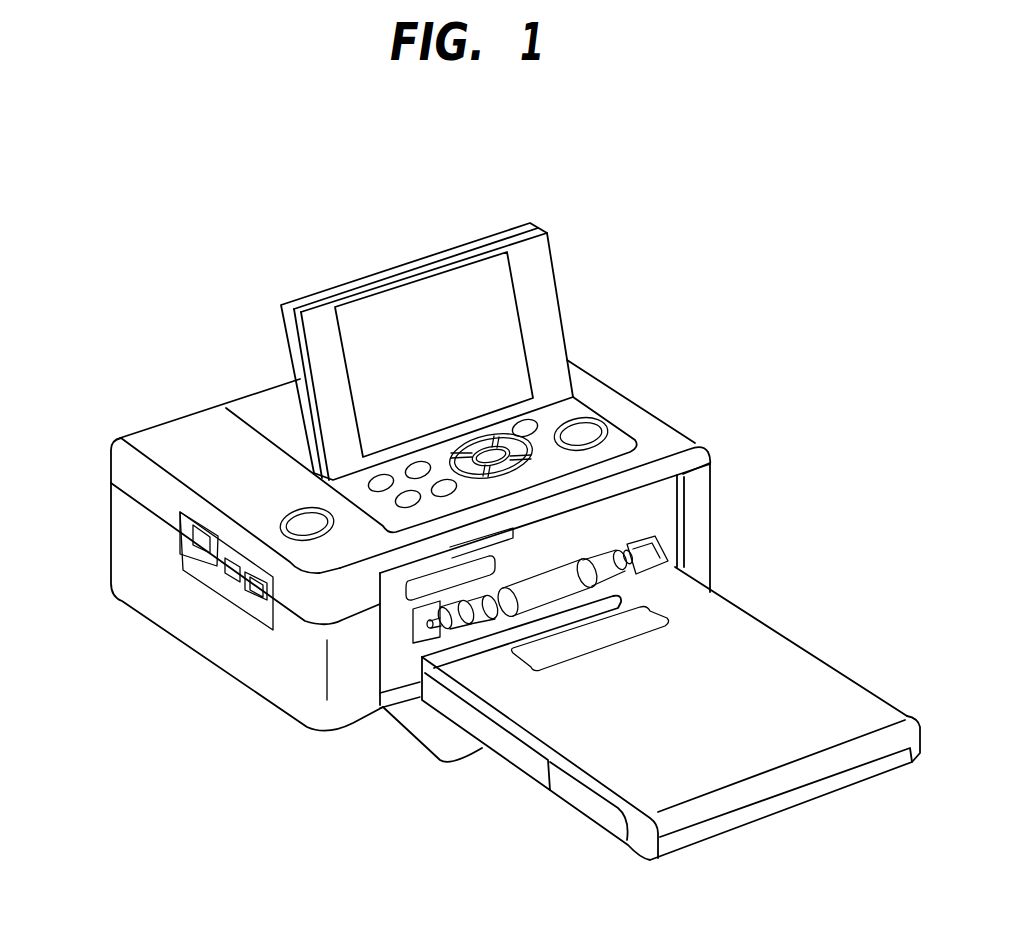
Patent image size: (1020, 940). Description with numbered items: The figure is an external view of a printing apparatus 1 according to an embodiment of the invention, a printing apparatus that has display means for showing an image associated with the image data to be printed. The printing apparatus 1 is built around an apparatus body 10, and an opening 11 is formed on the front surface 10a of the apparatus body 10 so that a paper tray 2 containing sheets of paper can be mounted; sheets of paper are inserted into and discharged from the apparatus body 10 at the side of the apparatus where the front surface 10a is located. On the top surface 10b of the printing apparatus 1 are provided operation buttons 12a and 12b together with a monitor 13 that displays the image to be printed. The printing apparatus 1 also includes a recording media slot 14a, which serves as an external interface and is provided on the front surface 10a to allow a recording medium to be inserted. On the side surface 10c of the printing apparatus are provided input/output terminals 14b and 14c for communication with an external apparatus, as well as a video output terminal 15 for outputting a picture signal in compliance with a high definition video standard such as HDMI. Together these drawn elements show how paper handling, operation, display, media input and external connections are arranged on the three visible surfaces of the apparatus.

The printing apparatus 1 is at (473, 166).
The paper tray 2 is at (808, 682).
The apparatus body 10 is at (632, 397).
The front surface 10a is at (647, 495).
The top surface 10b is at (167, 437).
The side surface 10c is at (138, 548).
The opening 11 is at (670, 548).
The operation button 12a is at (653, 428).
The operation button 12b is at (302, 525).
The monitor 13 is at (497, 310).
The recording media slot 14a is at (410, 590).
The input/output terminal 14b is at (257, 587).
The input/output terminal 14c is at (232, 568).
The video output terminal 15 is at (200, 540).